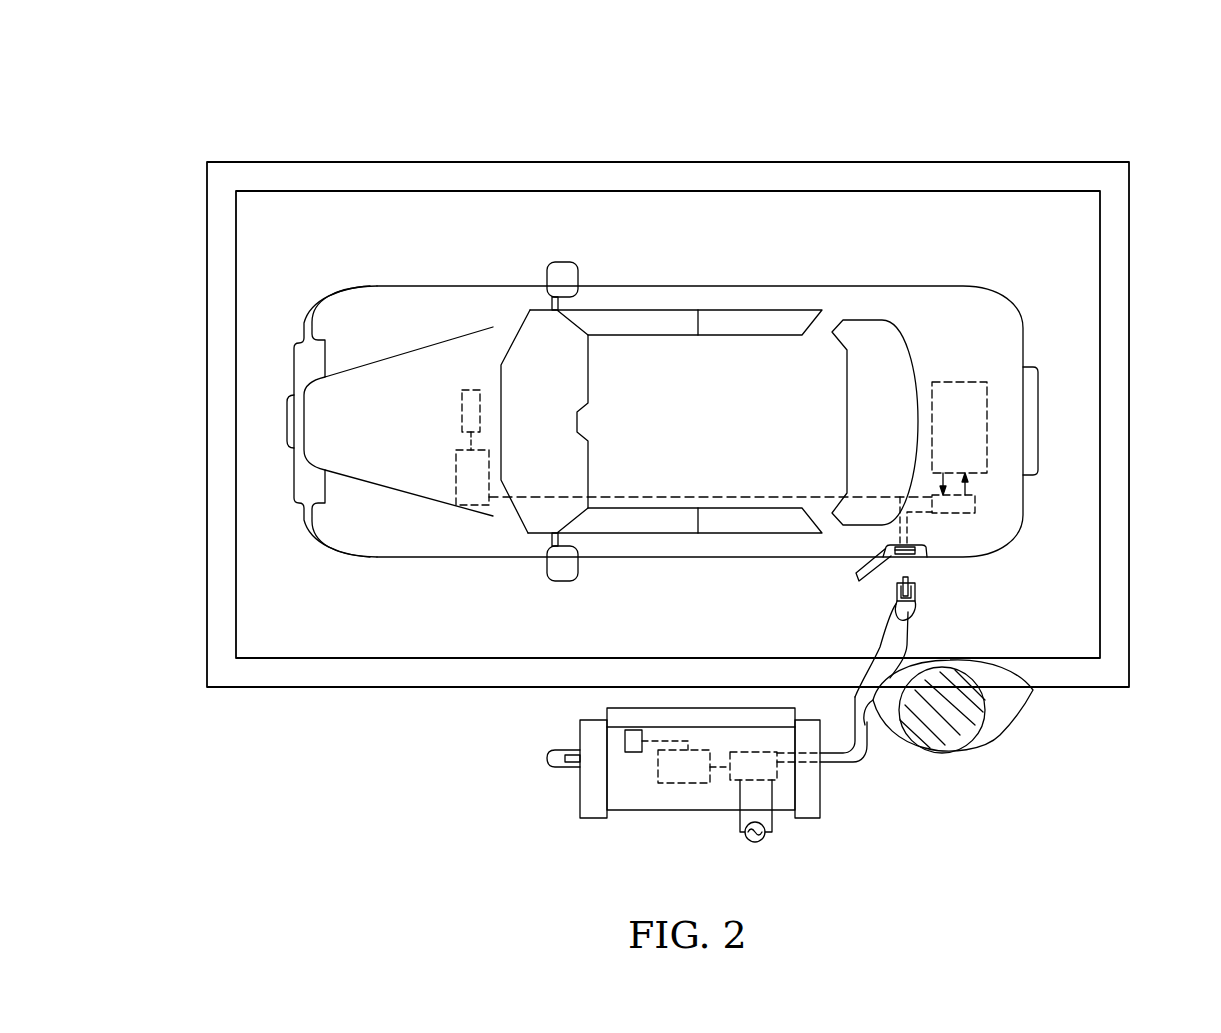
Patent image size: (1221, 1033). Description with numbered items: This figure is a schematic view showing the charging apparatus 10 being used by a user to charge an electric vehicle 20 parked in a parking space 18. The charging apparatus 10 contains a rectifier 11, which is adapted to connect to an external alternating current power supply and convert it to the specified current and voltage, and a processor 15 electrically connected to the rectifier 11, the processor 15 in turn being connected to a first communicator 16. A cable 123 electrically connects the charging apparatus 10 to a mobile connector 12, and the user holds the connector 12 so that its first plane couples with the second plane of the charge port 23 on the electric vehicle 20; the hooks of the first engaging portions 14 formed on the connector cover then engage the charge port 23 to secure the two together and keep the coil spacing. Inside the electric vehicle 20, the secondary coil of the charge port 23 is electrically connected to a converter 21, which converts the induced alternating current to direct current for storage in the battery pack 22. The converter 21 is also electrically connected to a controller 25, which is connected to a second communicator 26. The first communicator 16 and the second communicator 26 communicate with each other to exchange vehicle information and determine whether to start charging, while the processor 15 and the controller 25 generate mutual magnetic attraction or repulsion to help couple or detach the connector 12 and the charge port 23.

The parking space 18 is at (953, 161).
The electric vehicle 20 is at (688, 277).
The second communicator 26 is at (465, 390).
The controller 25 is at (456, 478).
The battery pack 22 is at (987, 402).
The converter 21 is at (975, 500).
The charge port 23 is at (920, 544).
The connector 12 is at (918, 598).
The first engaging portion 14 is at (897, 588).
The charging apparatus 10 is at (576, 787).
The first communicator 16 is at (626, 740).
The processor 15 is at (658, 772).
The rectifier 11 is at (778, 772).
The cable 123 is at (862, 722).